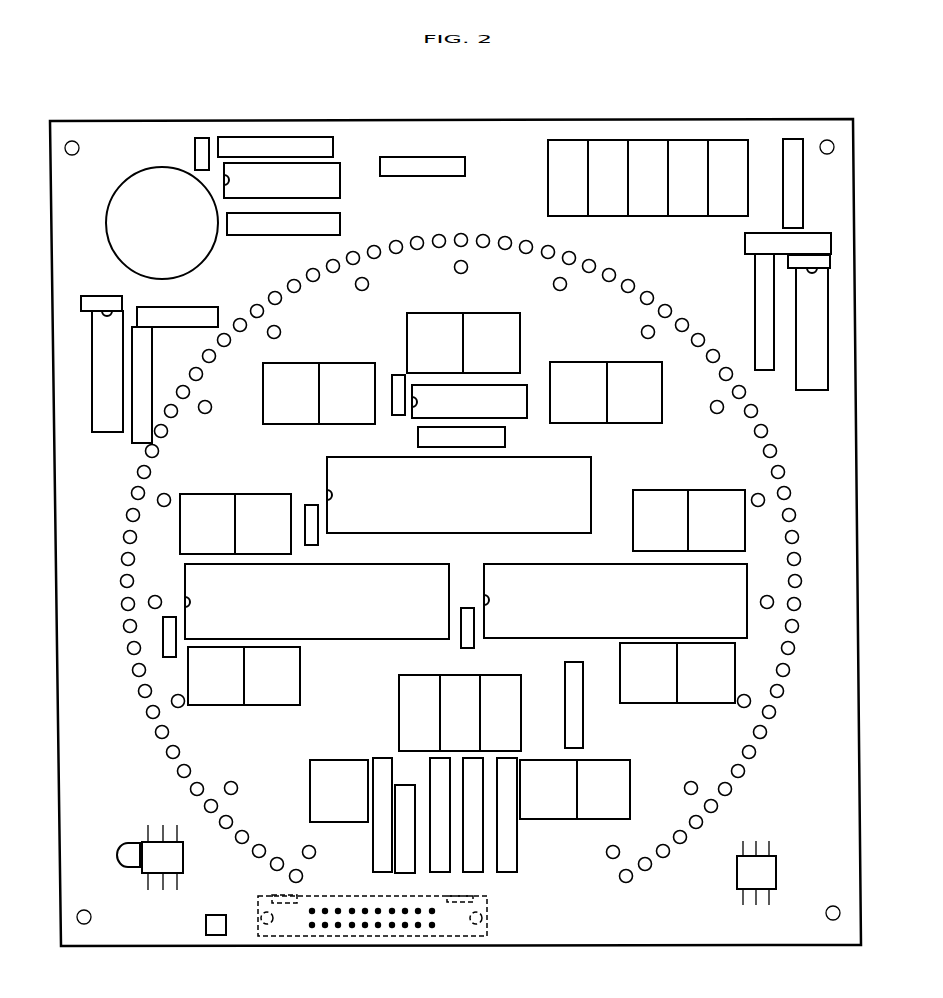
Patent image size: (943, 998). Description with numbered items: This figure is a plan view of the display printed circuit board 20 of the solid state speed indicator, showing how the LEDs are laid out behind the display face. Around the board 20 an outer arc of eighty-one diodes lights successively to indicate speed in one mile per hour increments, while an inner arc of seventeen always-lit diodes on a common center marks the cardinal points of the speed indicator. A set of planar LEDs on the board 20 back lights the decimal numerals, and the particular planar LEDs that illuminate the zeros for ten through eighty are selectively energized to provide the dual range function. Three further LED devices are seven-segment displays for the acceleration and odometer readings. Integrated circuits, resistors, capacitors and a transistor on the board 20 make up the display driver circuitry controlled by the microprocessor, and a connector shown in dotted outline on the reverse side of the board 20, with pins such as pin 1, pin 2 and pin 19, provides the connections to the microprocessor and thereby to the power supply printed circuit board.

The display printed circuit board 20 is at (206, 957).
The connector J1 pin 1 is at (307, 911).
The connector J1 pin 2 is at (307, 925).
The connector J1 pin 19 is at (440, 911).